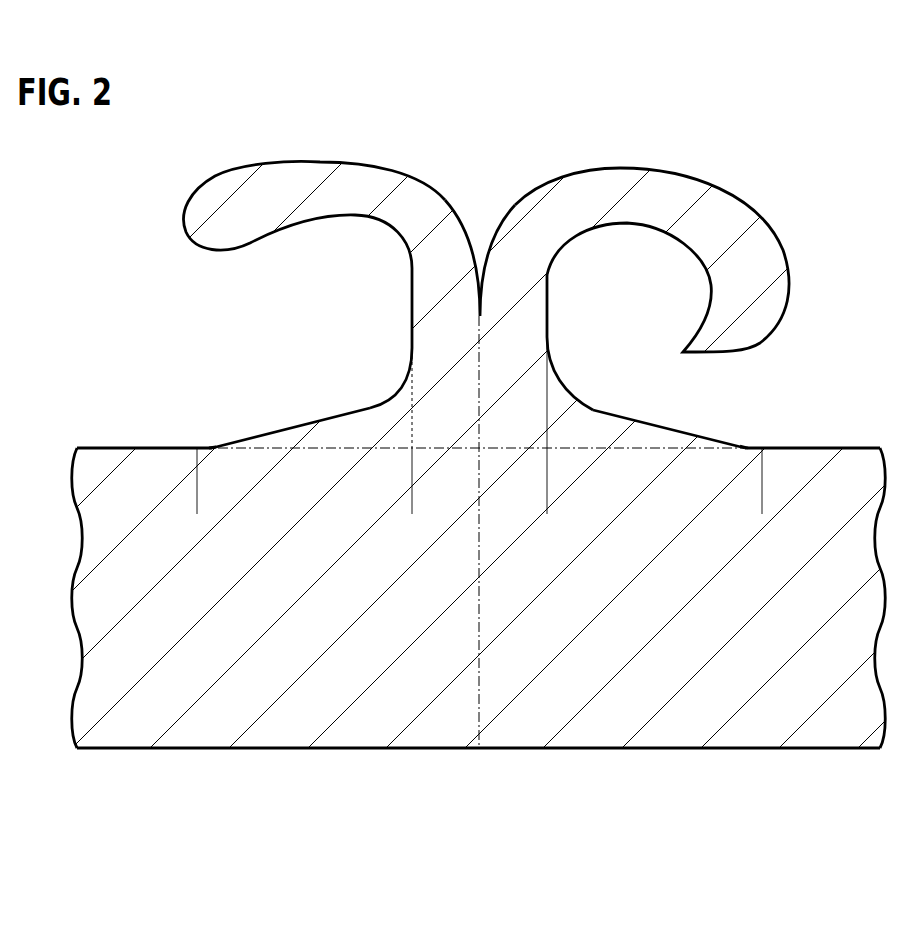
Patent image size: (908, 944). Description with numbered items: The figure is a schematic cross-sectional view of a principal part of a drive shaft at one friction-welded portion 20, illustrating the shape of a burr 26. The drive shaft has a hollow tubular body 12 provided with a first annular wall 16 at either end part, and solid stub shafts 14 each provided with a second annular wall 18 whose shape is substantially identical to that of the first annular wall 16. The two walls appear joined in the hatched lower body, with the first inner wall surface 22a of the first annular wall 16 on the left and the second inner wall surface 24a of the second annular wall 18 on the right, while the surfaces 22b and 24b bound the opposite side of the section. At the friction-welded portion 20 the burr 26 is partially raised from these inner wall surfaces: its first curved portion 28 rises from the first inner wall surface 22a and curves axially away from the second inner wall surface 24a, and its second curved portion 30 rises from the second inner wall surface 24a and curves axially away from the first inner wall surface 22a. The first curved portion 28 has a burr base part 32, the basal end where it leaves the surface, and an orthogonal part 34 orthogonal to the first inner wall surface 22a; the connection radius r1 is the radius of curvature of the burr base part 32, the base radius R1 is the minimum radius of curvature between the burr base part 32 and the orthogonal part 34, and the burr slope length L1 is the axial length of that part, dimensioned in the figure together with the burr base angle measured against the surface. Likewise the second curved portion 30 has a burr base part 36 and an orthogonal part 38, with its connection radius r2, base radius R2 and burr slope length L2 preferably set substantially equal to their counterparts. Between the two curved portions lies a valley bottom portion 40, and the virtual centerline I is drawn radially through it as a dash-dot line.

The hollow tubular body 12 is at (312, 687).
The solid stub shaft 14 is at (653, 682).
The first annular wall 16 is at (221, 625).
The second annular wall 18 is at (766, 625).
The friction-welded portion 20 is at (513, 768).
The first inner wall surface 22a is at (145, 447).
The lower surface of first plate portion 22b is at (131, 750).
The second inner wall surface 24a is at (858, 447).
The lower surface of second plate portion 24b is at (811, 750).
The burr 26 is at (512, 142).
The first curved portion 28 is at (243, 165).
The second curved portion 30 is at (623, 167).
The burr base part 32 is at (217, 447).
The orthogonal part 34 is at (411, 296).
The burr base part 36 is at (740, 447).
The orthogonal part 38 is at (549, 300).
The valley bottom portion 40 is at (480, 316).
The base radius R1 is at (388, 380).
The base radius R2 is at (574, 380).
The connection radius r1 is at (210, 445).
The connection radius r2 is at (750, 445).
The burr slope length L1 is at (412, 508).
The burr slope length L2 is at (547, 508).
The virtual centerline I is at (477, 695).